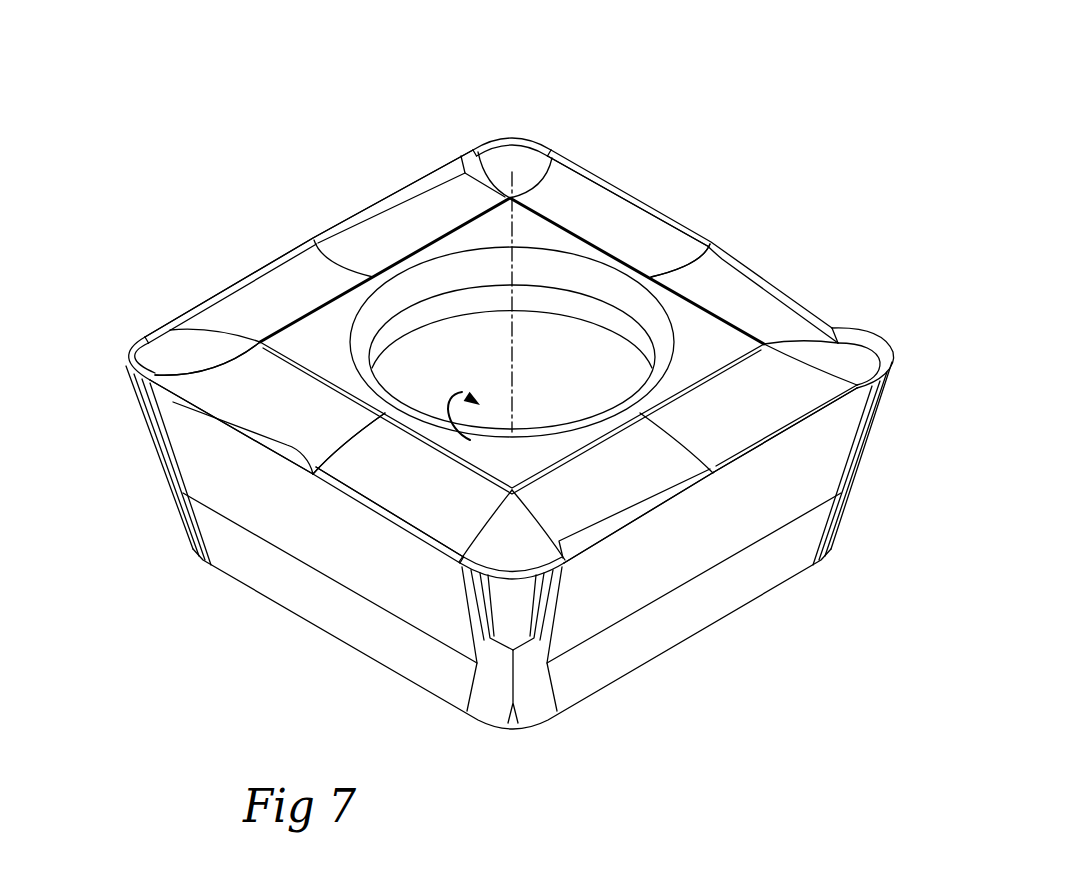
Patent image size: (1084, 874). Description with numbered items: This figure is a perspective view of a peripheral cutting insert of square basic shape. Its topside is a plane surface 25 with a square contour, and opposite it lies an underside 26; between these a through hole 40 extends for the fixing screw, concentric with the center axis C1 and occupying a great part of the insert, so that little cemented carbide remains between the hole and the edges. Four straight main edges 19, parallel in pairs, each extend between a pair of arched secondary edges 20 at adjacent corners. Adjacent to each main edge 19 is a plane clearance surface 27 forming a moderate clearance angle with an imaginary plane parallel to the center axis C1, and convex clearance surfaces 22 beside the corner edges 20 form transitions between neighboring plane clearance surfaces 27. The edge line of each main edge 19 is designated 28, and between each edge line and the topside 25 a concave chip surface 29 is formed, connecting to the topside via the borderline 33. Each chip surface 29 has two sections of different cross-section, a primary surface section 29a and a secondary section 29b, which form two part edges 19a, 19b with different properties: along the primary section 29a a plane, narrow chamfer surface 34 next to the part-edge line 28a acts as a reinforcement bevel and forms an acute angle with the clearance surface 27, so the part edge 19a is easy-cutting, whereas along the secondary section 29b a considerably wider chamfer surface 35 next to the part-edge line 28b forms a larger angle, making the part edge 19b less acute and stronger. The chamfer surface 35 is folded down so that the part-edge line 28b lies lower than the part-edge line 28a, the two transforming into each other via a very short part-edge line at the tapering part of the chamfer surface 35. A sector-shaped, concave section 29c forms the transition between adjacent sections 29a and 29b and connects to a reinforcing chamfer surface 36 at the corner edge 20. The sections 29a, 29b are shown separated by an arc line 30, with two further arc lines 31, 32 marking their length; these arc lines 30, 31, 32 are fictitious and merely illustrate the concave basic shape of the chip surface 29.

The main edge 19 is at (307, 215).
The part edge 19a is at (748, 440).
The part edge 19b is at (600, 513).
The secondary edge 20 is at (507, 130).
The convex clearance surface 22 is at (510, 614).
The plane surface 25 is at (683, 359).
The underside 26 is at (627, 677).
The clearance surface 27 is at (233, 505).
The edge line 28 is at (277, 261).
The part-edge line 28a is at (820, 413).
The part-edge line 28b is at (630, 528).
The chip surface 29 is at (635, 228).
The primary surface section 29a is at (383, 492).
The secondary section 29b is at (263, 414).
The sector-shaped section 29c is at (163, 366).
The arc line 30 is at (362, 437).
The arc line 31 is at (473, 535).
The arc line 32 is at (200, 372).
The borderline 33 is at (267, 350).
The chamfer surface 34 is at (607, 181).
The chamfer surface 35 is at (403, 200).
The reinforcing chamfer surface 36 is at (535, 137).
The through hole 40 is at (476, 429).
The center axis C1 is at (513, 387).